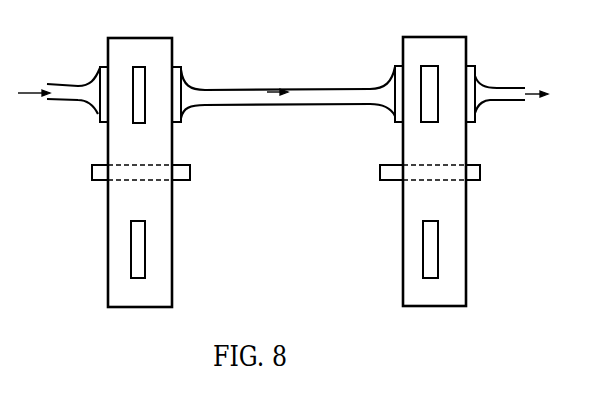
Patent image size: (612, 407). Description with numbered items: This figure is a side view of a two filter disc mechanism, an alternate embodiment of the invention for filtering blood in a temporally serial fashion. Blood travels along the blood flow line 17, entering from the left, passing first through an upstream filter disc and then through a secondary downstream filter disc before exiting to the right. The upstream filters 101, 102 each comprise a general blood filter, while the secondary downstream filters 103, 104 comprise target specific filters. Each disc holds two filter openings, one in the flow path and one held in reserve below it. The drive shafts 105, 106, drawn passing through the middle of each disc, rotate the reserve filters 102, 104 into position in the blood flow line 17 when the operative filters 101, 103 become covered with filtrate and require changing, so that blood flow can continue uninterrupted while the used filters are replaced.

The upstream filter 101 is at (141, 83).
The upstream filter 102 is at (141, 265).
The secondary downstream filter 103 is at (433, 87).
The secondary downstream filter 104 is at (437, 258).
The drive shaft 105 is at (185, 172).
The drive shaft 106 is at (380, 165).
The blood flow line 17 is at (510, 80).